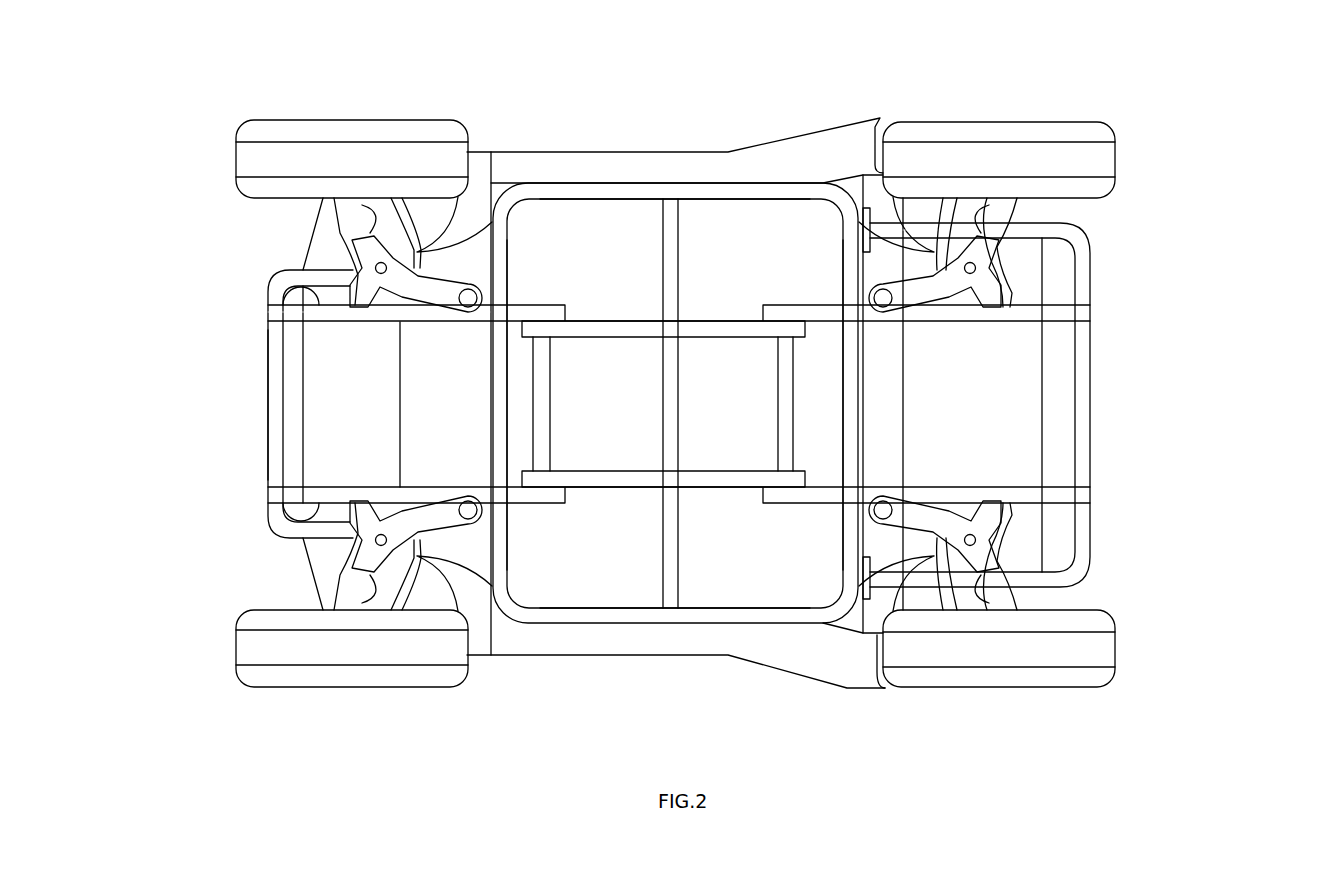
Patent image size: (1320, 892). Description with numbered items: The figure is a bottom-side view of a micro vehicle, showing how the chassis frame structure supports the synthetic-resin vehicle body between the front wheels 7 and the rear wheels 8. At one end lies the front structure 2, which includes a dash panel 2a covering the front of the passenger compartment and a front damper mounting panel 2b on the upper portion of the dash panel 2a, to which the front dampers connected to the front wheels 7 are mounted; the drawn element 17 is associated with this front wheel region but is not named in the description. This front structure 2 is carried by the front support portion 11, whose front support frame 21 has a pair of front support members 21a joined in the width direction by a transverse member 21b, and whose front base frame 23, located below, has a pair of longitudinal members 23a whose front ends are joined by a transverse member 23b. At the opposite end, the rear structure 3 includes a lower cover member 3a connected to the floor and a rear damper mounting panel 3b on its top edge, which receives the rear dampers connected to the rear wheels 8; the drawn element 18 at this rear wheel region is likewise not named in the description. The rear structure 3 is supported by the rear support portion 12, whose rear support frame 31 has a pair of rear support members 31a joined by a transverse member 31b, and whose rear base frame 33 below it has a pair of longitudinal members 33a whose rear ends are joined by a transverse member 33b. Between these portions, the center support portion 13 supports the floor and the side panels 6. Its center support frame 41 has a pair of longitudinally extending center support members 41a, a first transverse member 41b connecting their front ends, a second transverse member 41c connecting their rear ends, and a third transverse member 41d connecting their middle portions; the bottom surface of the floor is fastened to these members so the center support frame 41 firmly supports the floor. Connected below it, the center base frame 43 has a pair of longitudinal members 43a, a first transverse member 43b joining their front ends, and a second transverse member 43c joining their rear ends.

The front structure 2 is at (347, 405).
The dash panel 2a is at (410, 402).
The front damper mounting panel 2b is at (325, 245).
The rear structure 3 is at (1025, 406).
The lower cover member 3a is at (892, 405).
The rear damper mounting panel 3b is at (1020, 267).
The side panels 6 is at (670, 655).
The front wheel 7 is at (350, 120).
The rear wheel 8 is at (996, 122).
The front support portion 11 is at (315, 405).
The rear support portion 12 is at (1178, 378).
The center support portion 13 is at (634, 170).
The front shock absorber 17 is at (345, 195).
The rear shock absorber 18 is at (1000, 215).
The front support frame 21 is at (321, 390).
The front support members 21a is at (320, 288).
The transverse member 21b is at (275, 300).
The front base frame 23 is at (321, 404).
The longitudinal members 23a is at (332, 312).
The transverse member 23b is at (272, 357).
The rear support frame 31 is at (1018, 403).
The rear support members 31a is at (916, 230).
The transverse member 31b is at (1090, 287).
The rear base frame 33 is at (1024, 406).
The longitudinal members 33a is at (1013, 318).
The transverse member 33b is at (1090, 405).
The center support frame 41 is at (675, 361).
The center support members 41a is at (588, 200).
The first transverse member 41b is at (505, 266).
The second transverse member 41c is at (858, 540).
The third transverse member 41d is at (680, 266).
The center base frame 43 is at (663, 362).
The longitudinal members 43a is at (624, 338).
The first transverse member 43b is at (547, 405).
The second transverse member 43c is at (783, 405).